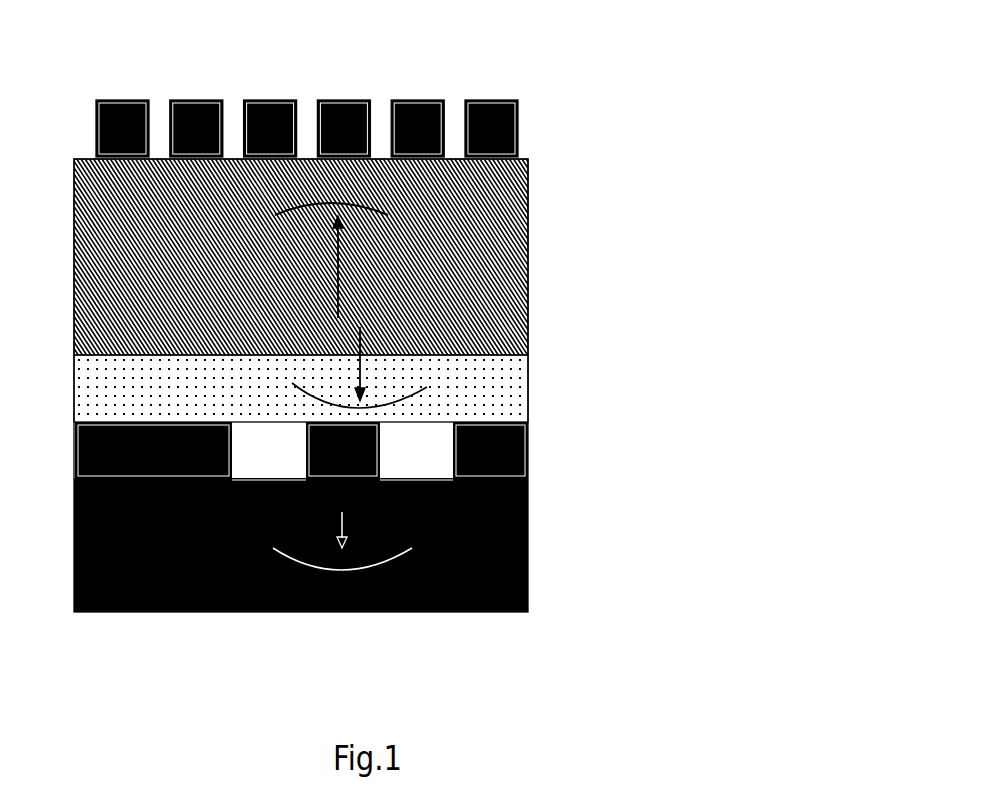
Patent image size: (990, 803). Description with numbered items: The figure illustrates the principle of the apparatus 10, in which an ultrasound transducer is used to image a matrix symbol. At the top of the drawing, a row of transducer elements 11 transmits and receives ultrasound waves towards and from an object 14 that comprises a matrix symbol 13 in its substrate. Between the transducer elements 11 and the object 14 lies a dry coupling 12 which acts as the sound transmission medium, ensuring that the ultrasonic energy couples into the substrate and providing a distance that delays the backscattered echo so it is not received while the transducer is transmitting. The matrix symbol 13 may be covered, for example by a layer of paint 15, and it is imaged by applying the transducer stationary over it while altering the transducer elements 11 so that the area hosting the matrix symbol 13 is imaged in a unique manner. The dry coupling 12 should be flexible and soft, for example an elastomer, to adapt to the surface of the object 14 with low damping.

The apparatus 10 is at (492, 90).
The transducer elements 11 is at (519, 128).
The dry coupling 12 is at (479, 283).
The matrix symbol 13 is at (513, 517).
The object 14 is at (378, 541).
The paint 15 is at (517, 388).